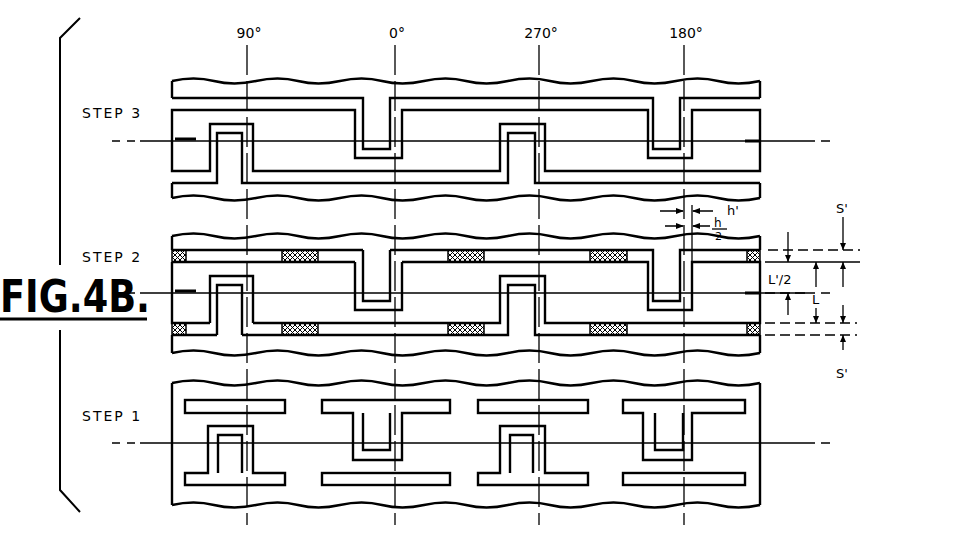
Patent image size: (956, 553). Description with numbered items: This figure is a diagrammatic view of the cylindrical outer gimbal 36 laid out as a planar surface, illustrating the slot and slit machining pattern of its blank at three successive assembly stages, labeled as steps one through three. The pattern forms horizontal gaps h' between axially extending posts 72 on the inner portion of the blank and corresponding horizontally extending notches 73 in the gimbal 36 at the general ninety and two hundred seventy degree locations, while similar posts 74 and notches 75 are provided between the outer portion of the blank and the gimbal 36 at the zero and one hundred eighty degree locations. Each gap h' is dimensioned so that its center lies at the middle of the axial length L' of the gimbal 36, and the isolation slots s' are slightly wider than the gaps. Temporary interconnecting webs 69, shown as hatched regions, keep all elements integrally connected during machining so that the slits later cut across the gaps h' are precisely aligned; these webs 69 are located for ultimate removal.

The outer gimbal 36 is at (762, 122).
The temporary interconnecting webs 69 is at (609, 408).
The axially extending posts 72 is at (230, 316).
The horizontally extending notches 73 is at (248, 285).
The posts 74 is at (388, 272).
The notches 75 is at (361, 272).